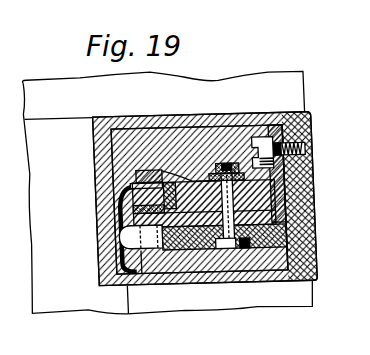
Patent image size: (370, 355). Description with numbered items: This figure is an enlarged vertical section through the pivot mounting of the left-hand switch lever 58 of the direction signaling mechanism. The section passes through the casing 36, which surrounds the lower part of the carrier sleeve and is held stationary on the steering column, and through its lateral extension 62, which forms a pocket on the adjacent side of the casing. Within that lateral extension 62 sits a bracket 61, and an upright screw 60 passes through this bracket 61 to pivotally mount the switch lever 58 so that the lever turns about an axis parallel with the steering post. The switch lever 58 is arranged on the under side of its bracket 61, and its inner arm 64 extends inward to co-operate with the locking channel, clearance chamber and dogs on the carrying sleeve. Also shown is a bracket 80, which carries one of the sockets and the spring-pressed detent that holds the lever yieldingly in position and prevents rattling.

The casing 36 is at (258, 280).
The switch lever 58 is at (258, 239).
The upright screw 60 is at (233, 242).
The bracket 61 is at (272, 210).
The lateral extension 62 is at (272, 262).
The inner arm 64 is at (128, 237).
The bracket 80 is at (168, 178).